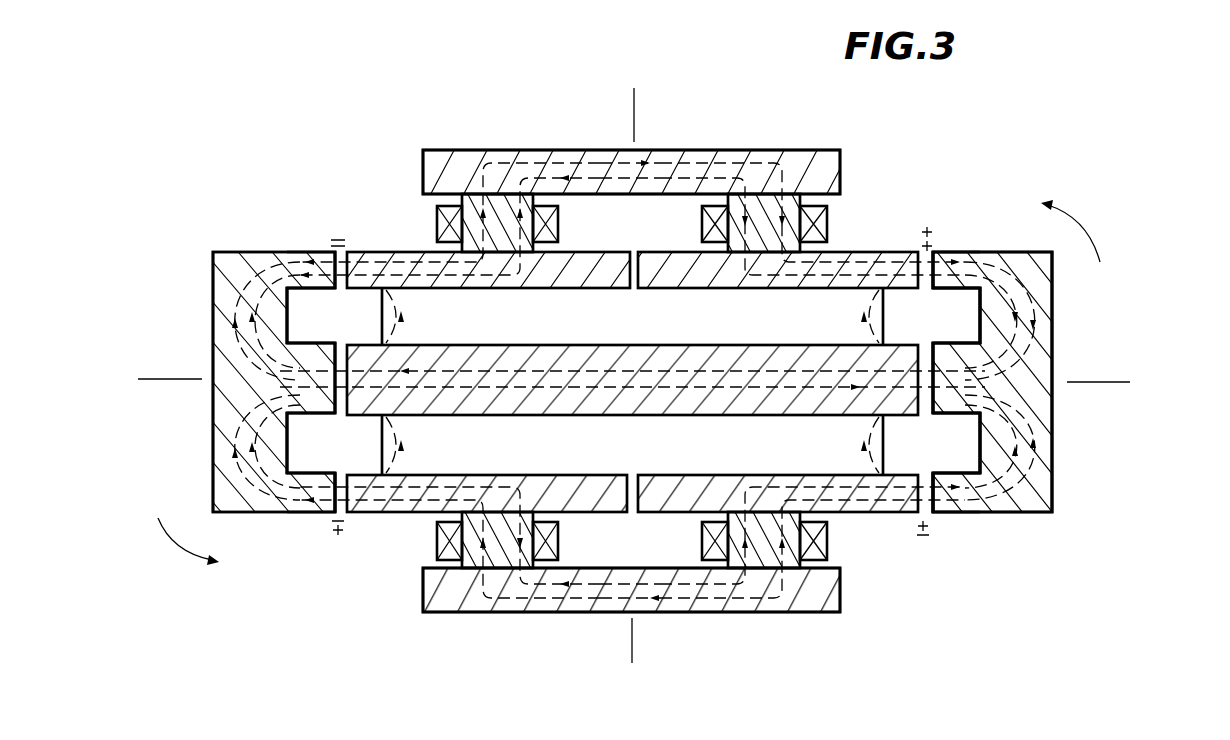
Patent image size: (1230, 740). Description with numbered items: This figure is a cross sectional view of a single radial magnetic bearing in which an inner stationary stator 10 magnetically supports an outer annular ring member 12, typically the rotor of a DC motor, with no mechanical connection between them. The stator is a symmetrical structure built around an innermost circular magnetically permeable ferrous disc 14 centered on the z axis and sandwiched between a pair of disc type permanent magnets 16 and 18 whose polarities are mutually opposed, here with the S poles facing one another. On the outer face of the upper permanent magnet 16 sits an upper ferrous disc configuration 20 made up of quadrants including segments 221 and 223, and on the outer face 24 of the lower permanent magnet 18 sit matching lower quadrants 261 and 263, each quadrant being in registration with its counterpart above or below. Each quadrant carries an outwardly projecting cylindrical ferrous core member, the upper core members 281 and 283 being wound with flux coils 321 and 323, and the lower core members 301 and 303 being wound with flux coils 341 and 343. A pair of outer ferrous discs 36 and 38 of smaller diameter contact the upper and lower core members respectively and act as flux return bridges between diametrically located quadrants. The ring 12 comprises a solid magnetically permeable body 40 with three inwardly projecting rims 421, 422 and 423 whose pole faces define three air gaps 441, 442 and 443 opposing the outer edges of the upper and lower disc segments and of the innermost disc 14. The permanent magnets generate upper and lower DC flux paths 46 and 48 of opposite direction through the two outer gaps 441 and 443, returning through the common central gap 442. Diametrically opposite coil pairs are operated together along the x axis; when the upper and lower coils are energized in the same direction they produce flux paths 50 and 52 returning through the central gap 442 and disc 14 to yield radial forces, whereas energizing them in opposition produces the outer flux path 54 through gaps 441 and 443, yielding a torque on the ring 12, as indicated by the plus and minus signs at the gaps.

The stator 10 is at (915, 200).
The annular ring member 12 is at (215, 424).
The innermost ferrous disc 14 is at (535, 355).
The upper permanent magnet 16 is at (693, 331).
The lower permanent magnet 18 is at (701, 456).
The rotor pole piece 20 is at (632, 266).
The upper ferrous disc quadrant 221 is at (612, 268).
The upper ferrous disc quadrant 223 is at (690, 258).
The outer face of lower permanent magnet 24 is at (632, 494).
The lower ferrous disc quadrant 261 is at (573, 498).
The lower ferrous disc quadrant 263 is at (680, 505).
The upper core member 281 is at (520, 228).
The upper core member 283 is at (763, 240).
The lower core member 301 is at (499, 562).
The lower core member 303 is at (775, 562).
The upper flux coil 321 is at (437, 224).
The upper flux coil 323 is at (827, 222).
The lower flux coil 341 is at (437, 545).
The lower flux coil 343 is at (827, 545).
The upper outer ferrous disc 36 is at (422, 180).
The lower outer ferrous disc 38 is at (425, 598).
The magnetically permeable body 40 is at (1042, 486).
The upper inwardly projecting rim 421 is at (303, 263).
The central inwardly projecting rim 422 is at (300, 392).
The lower inwardly projecting rim 423 is at (298, 498).
The upper air gap 441 is at (343, 292).
The central air gap 442 is at (340, 418).
The lower air gap 443 is at (337, 473).
The upper DC flux path 46 is at (404, 314).
The lower DC flux path 48 is at (404, 447).
The upper radial force flux path 50 is at (518, 195).
The lower radial force flux path 52 is at (762, 492).
The outer flux path 54 is at (237, 280).